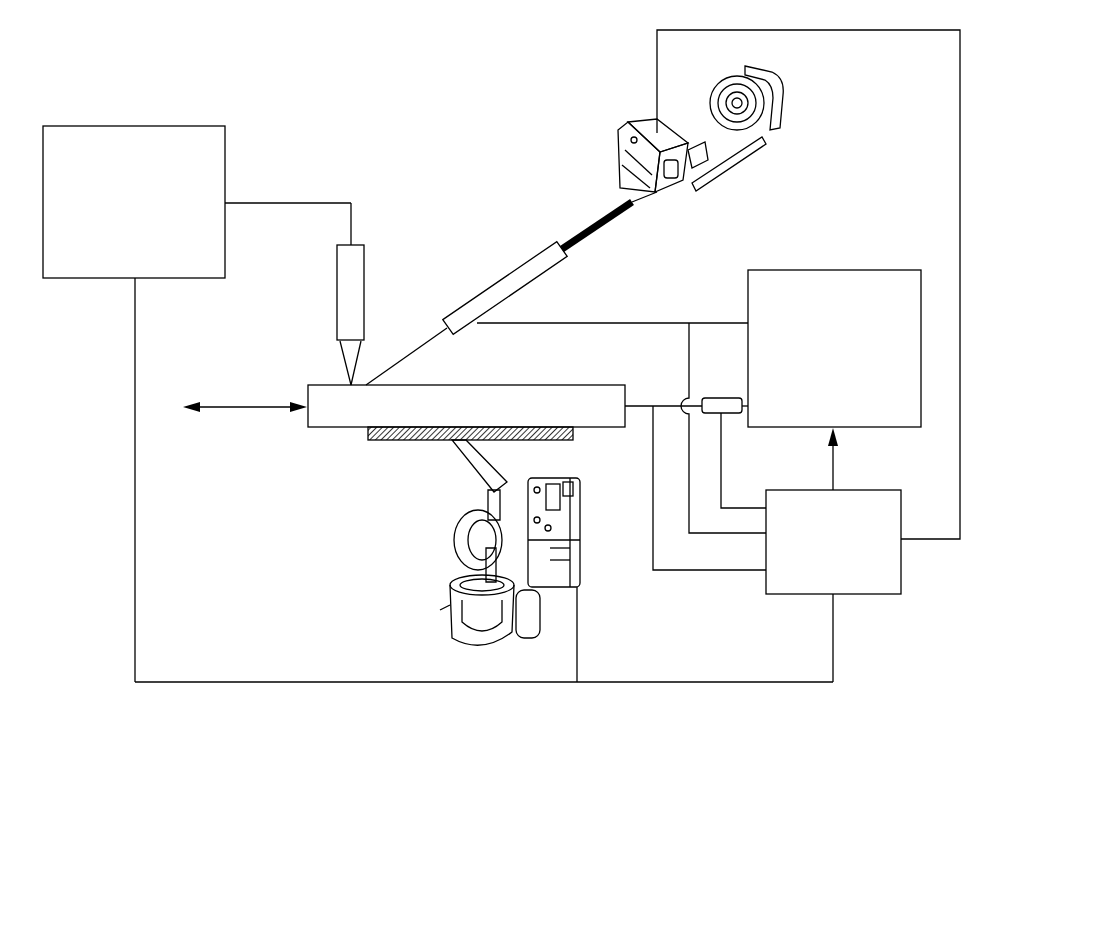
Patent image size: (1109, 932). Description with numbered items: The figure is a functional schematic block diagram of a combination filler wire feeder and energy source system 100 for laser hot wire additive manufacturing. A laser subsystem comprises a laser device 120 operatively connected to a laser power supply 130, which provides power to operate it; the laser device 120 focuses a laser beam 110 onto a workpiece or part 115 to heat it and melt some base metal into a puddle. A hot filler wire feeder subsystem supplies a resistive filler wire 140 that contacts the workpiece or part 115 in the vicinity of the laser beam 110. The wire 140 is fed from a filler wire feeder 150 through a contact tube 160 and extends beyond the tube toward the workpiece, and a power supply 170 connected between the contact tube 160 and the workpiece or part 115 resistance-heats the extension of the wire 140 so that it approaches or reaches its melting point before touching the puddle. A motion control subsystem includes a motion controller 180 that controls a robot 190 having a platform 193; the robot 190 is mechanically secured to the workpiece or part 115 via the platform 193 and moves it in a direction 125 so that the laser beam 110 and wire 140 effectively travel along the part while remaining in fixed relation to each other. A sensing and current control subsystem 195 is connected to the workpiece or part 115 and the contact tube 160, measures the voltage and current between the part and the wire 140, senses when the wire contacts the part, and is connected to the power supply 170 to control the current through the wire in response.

The combination filler wire feeder and energy source system 100 is at (113, 68).
The laser beam 110 is at (348, 351).
The workpiece or part 115 is at (518, 385).
The laser device 120 is at (337, 297).
The direction of travel 125 is at (255, 407).
The laser power supply 130 is at (172, 126).
The resistive filler wire 140 is at (403, 358).
The filler wire feeder 150 is at (725, 163).
The contact tube 160 is at (510, 272).
The power supply 170 is at (793, 270).
The motion controller 180 is at (582, 518).
The robot 190 is at (466, 522).
The platform 193 is at (387, 440).
The sensing and current control subsystem 195 is at (806, 594).